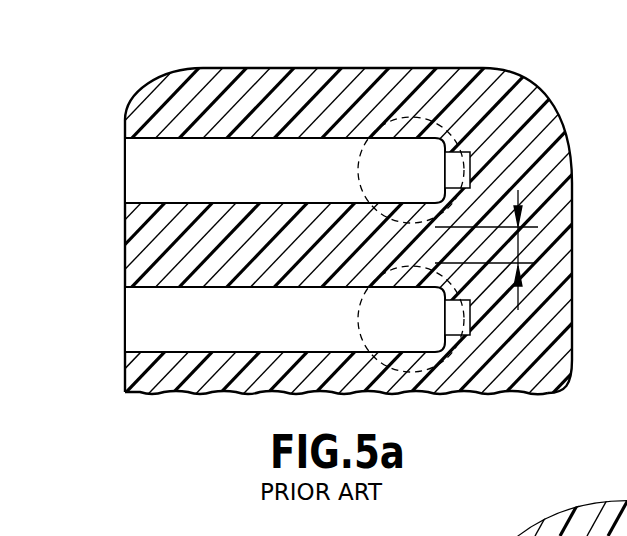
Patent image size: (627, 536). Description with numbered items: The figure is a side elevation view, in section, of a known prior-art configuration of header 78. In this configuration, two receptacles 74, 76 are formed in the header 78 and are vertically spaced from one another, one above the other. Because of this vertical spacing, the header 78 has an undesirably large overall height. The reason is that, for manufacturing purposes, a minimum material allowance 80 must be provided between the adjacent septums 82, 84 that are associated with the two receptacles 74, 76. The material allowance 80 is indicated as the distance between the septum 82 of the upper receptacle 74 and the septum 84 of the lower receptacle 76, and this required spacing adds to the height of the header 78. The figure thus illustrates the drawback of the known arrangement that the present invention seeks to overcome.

The receptacle 74 is at (167, 138).
The receptacle 76 is at (167, 287).
The header 78 is at (528, 115).
The minimum material allowance 80 is at (520, 252).
The septum 82 is at (408, 113).
The septum 84 is at (360, 320).